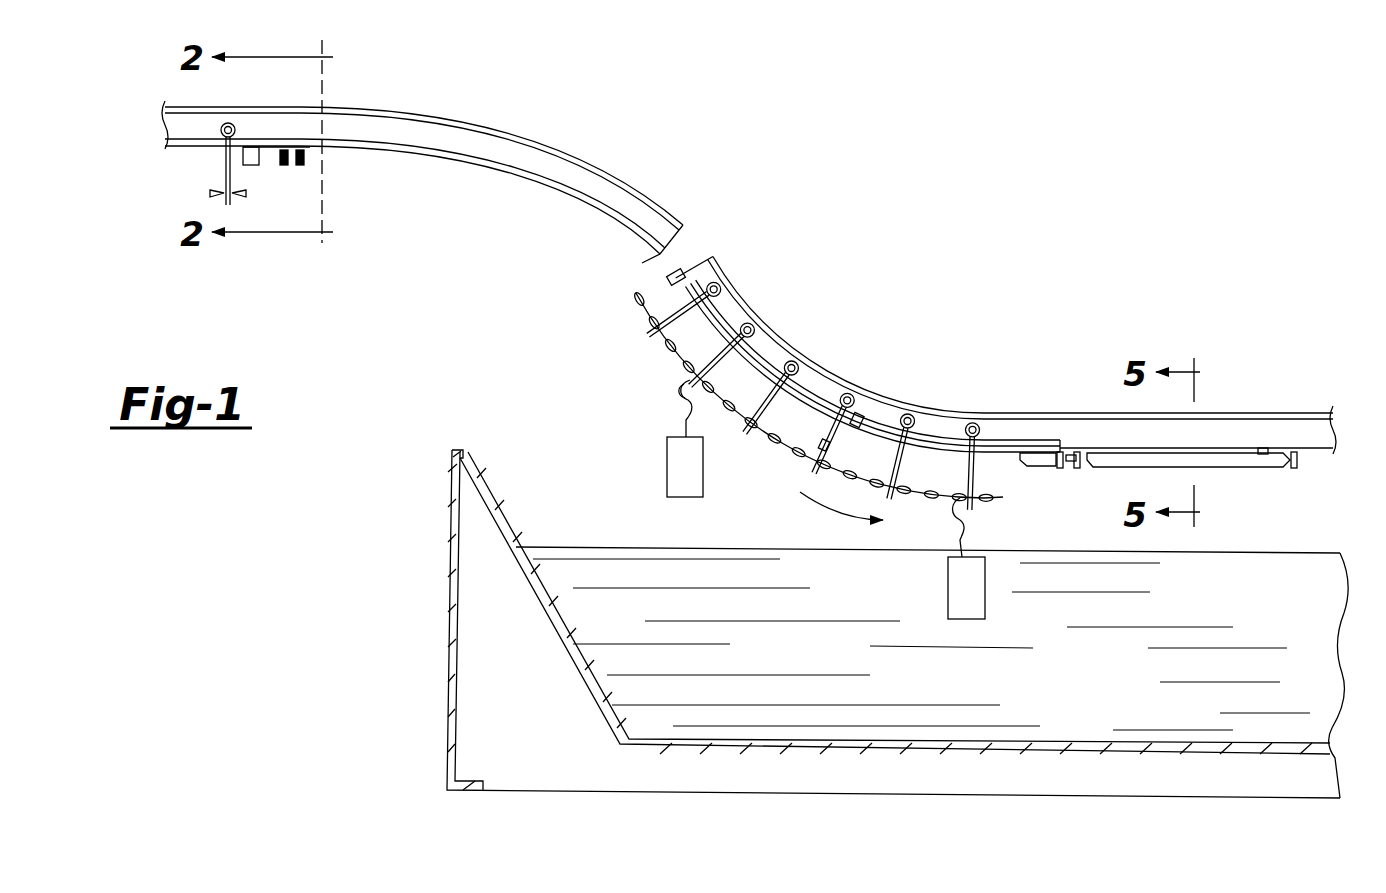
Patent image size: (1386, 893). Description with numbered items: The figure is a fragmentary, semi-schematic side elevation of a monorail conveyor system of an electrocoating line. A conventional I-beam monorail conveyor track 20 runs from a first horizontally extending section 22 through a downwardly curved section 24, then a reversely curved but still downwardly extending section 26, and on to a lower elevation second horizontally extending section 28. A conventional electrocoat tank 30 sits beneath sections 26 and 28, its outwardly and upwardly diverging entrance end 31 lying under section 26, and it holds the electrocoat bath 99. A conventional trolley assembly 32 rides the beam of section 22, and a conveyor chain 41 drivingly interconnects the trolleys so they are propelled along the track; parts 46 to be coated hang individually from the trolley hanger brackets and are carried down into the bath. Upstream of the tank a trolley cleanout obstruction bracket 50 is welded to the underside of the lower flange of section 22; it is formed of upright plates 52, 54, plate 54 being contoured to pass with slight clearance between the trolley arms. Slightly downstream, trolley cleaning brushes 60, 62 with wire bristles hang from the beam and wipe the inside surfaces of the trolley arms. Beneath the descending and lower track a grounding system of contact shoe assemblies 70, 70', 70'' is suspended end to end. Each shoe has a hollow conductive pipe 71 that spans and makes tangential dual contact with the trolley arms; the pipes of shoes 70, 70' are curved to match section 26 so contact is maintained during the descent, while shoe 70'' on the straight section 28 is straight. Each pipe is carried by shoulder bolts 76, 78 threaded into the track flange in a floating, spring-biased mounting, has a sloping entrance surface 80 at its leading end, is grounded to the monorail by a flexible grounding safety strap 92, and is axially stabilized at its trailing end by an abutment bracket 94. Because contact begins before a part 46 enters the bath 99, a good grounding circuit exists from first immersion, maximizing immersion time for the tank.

The I-beam monorail conveyor track 20 is at (562, 118).
The first horizontally extending section 22 is at (352, 108).
The downwardly curved section 24 is at (690, 227).
The reversely curved but still downwardly extending section 26 is at (830, 365).
The lower elevation second horizontally extending section 28 is at (1288, 415).
The electrocoat tank 30 is at (440, 618).
The entrance end 31 is at (492, 498).
The trolley assembly 32 is at (220, 160).
The conveyor chain 41 is at (787, 457).
The parts 46 is at (667, 467).
The trolley cleanout obstruction bracket 50 is at (252, 166).
The upright plate 52 is at (236, 152).
The upright plate 54 is at (261, 166).
The trolley cleaning brush 60 is at (293, 169).
The trolley cleaning brush 62 is at (313, 157).
The contact shoe assembly 70 is at (811, 401).
The contact shoe assembly 70' is at (1032, 492).
The contact shoe assembly 70'' is at (1188, 489).
The hollow pipe 71 is at (757, 378).
The shoulder bolt 76 is at (1075, 450).
The shoulder bolt 78 is at (1262, 450).
The sloping entrance surface 80 is at (662, 316).
The flexible grounding safety strap 92 is at (683, 290).
The abutment bracket 94 is at (665, 283).
The electrocoat bath 99 is at (573, 545).